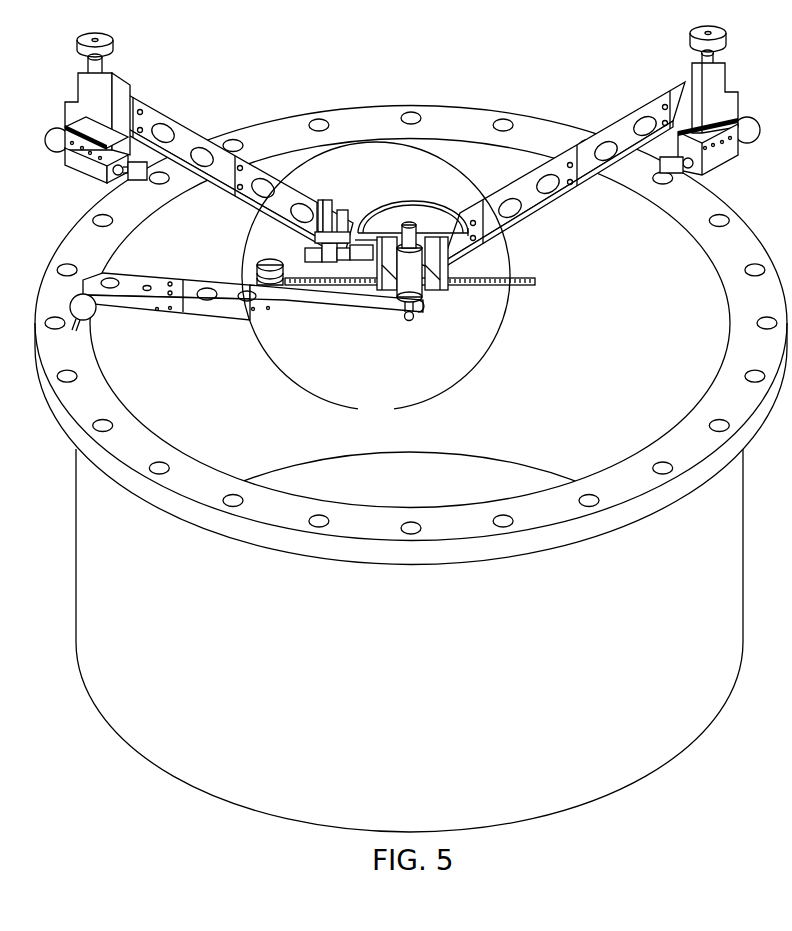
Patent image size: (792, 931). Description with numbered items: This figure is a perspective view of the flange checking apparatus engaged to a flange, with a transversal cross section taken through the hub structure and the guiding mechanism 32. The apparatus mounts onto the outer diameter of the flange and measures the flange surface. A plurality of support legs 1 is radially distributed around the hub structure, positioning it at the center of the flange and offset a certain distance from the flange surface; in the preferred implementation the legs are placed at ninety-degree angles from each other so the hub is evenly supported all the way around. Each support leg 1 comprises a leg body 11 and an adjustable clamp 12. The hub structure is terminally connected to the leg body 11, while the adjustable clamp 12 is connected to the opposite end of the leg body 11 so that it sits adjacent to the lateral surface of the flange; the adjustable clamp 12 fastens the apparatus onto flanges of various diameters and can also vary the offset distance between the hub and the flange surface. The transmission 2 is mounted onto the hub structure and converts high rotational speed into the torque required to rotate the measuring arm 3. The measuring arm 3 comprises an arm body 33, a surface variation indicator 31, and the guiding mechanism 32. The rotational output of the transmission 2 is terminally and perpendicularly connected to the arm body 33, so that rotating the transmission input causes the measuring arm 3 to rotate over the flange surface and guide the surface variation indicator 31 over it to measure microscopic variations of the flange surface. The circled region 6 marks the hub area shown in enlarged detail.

The support legs 1 is at (190, 116).
The leg body 11 is at (248, 157).
The adjustable clamp 12 is at (87, 166).
The transmission 2 is at (407, 333).
The measuring arm 3 is at (199, 324).
The surface variation indicator 31 is at (89, 313).
The guiding mechanism 32 is at (521, 254).
The arm body 33 is at (218, 316).
The enlarged detail region 6 is at (376, 286).